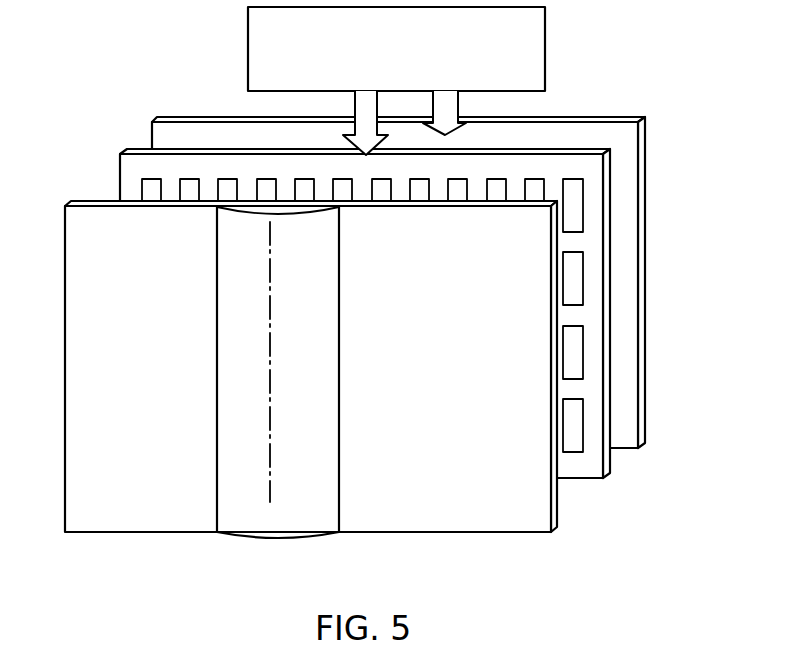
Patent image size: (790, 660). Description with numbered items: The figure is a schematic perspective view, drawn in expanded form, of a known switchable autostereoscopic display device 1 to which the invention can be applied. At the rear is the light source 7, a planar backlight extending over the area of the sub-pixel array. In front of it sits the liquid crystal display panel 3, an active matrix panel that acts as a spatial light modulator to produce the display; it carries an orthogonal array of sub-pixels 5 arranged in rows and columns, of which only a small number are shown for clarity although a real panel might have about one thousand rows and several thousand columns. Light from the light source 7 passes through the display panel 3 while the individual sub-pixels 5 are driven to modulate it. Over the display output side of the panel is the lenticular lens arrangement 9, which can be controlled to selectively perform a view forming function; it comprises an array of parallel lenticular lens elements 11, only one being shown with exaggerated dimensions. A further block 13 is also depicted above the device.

The autostereoscopic display device 1 is at (80, 100).
The liquid crystal display panel 3 is at (610, 462).
The sub-pixels 5 is at (577, 213).
The light source 7 is at (645, 430).
The lenticular lens arrangement 9 is at (557, 515).
The lenticular lens elements 11 is at (286, 528).
The controller 13 is at (545, 47).